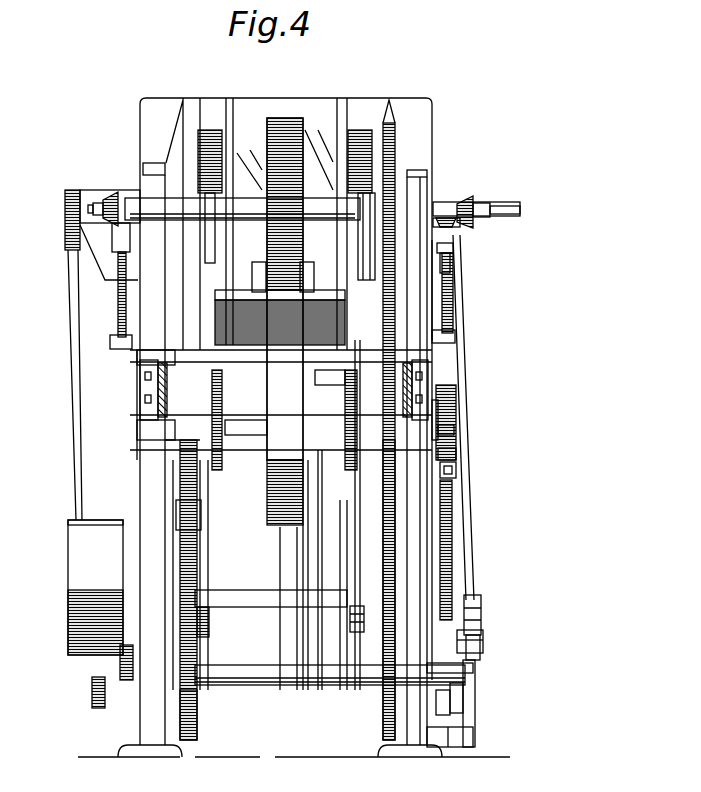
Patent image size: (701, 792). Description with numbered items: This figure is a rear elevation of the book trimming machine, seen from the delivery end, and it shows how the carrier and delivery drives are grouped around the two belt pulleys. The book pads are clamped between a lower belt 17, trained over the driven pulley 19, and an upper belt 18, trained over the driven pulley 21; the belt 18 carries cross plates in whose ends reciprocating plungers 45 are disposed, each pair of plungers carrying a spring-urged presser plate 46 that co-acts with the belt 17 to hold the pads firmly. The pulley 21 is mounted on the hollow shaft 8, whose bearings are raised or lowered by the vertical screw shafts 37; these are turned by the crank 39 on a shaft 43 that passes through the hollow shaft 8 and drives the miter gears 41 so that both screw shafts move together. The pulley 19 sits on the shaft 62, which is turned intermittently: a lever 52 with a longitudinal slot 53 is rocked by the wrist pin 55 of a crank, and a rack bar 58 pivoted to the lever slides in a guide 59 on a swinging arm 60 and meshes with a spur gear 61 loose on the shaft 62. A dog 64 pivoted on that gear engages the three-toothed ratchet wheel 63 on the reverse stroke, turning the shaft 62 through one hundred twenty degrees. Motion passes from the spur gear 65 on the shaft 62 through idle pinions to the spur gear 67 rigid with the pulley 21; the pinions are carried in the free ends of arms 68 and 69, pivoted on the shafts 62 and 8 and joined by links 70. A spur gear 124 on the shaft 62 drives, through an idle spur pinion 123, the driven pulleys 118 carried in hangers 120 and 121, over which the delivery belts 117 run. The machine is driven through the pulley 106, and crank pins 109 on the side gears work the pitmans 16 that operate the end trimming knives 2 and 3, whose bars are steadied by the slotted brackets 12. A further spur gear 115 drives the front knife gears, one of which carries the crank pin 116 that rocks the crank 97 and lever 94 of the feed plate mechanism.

The trimming knife 2 is at (465, 285).
The trimming knife 3 is at (110, 294).
The shaft 8 is at (322, 209).
The bracket 12 is at (251, 262).
The pitman 16 is at (75, 450).
The belt 17 is at (280, 525).
The belt 18 is at (290, 110).
The driven pulley 19 is at (285, 375).
The driven pulley 21 is at (285, 289).
The screw shaft 37 is at (120, 320).
The crank 39 is at (497, 206).
The miter gear 41 is at (117, 190).
The shaft 43 is at (440, 210).
The reciprocating plunger 45 is at (300, 290).
The presser plate 46 is at (392, 332).
The lever 52 is at (473, 692).
The longitudinal slot 53 is at (473, 670).
The wrist pin 55 is at (457, 707).
The rack bar 58 is at (452, 567).
The guide 59 is at (467, 482).
The arm 60 is at (452, 457).
The spur gear 61 is at (442, 433).
The shaft 62 is at (216, 503).
The ratchet wheel 63 is at (445, 420).
The dog 64 is at (448, 397).
The spur gear 65 is at (390, 497).
The spur gear 67 is at (392, 165).
The arm 68 is at (440, 373).
The arm 69 is at (450, 247).
The link 70 is at (447, 290).
The lever 94 is at (271, 580).
The crank 97 is at (343, 620).
The pulley 106 is at (72, 598).
The crank pin 109 is at (212, 638).
The spur gear 115 is at (197, 718).
The crank pin 116 is at (180, 475).
The belt 117 is at (263, 432).
The driven pulley 118 is at (320, 378).
The hanger 120 is at (281, 322).
The hanger 121 is at (203, 386).
The idle spur pinion 123 is at (210, 430).
The spur gear 124 is at (216, 507).